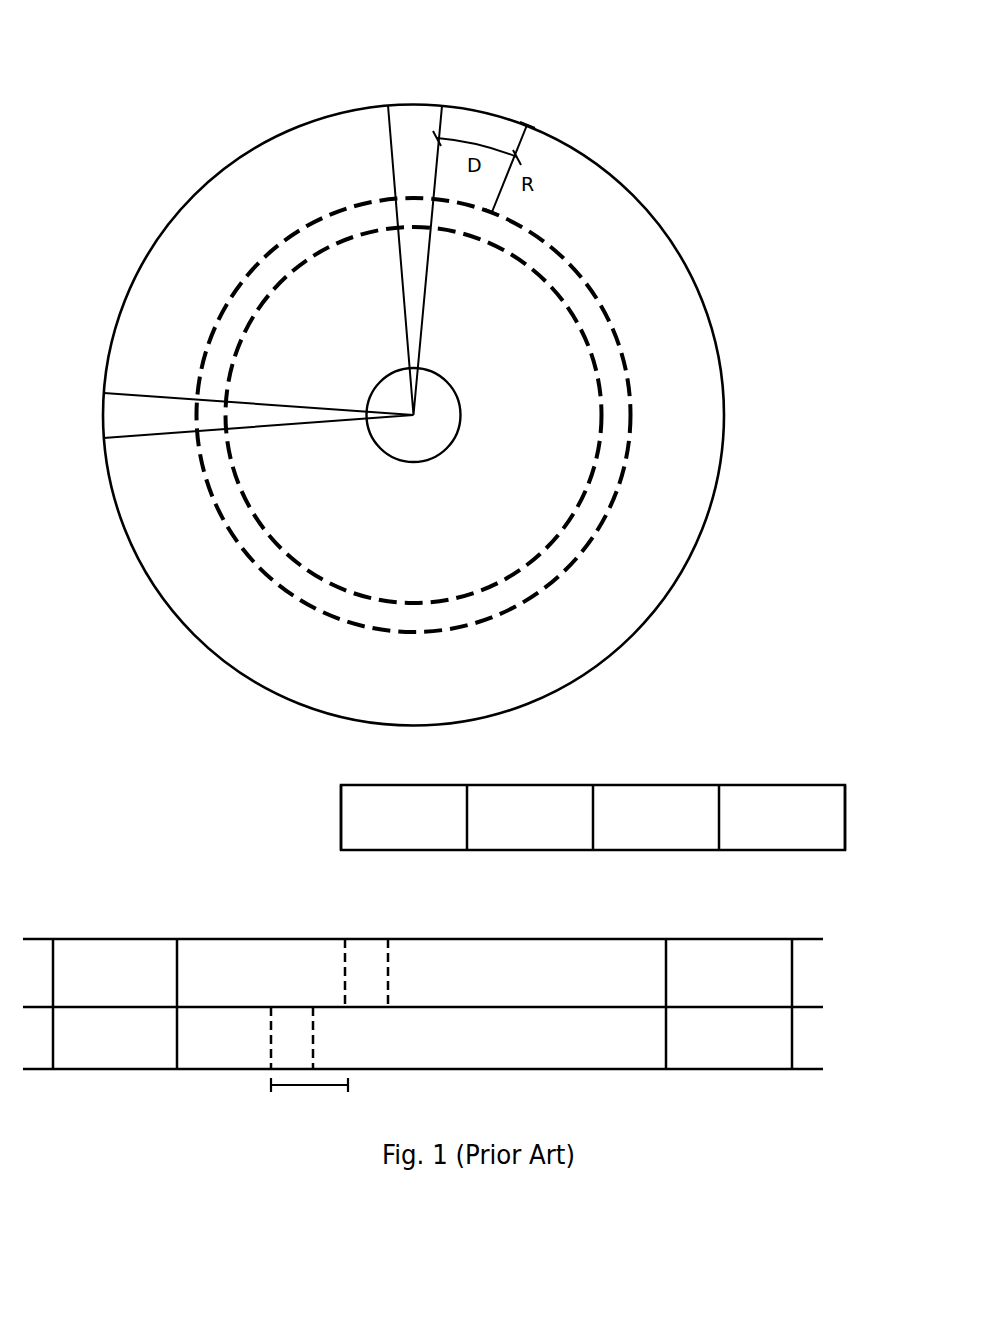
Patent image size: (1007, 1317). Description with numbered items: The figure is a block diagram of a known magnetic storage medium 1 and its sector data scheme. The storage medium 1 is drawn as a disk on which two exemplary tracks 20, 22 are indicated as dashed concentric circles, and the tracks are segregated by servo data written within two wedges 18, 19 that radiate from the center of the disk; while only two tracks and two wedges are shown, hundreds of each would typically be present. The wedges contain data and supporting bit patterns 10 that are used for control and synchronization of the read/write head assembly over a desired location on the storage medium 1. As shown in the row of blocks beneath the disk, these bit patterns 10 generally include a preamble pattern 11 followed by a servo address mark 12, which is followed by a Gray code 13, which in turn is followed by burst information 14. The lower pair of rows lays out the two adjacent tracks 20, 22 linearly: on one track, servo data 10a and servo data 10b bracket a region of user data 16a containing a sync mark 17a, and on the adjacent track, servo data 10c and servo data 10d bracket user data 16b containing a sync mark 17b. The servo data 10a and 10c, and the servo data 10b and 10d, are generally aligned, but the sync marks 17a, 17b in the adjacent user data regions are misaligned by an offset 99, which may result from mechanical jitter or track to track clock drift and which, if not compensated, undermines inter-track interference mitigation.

The storage medium 1 is at (112, 74).
The bit patterns 10 is at (706, 759).
The preamble pattern 11 is at (393, 846).
The servo address mark 12 is at (519, 846).
The Gray code 13 is at (645, 846).
The burst information 14 is at (771, 846).
The servo data 10a is at (98, 999).
The servo data 10b is at (712, 999).
The servo data 10c is at (98, 1061).
The servo data 10d is at (712, 1061).
The user data 16a is at (579, 996).
The user data 16b is at (579, 1061).
The sync mark 17a is at (383, 992).
The sync mark 17b is at (309, 1060).
The wedge 18 is at (410, 105).
The wedge 19 is at (109, 418).
The track 20 is at (569, 303).
The track 22 is at (552, 248).
The offset 99 is at (307, 1088).